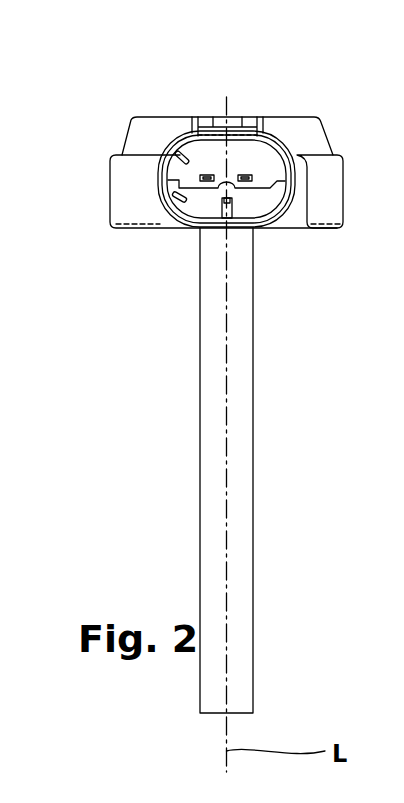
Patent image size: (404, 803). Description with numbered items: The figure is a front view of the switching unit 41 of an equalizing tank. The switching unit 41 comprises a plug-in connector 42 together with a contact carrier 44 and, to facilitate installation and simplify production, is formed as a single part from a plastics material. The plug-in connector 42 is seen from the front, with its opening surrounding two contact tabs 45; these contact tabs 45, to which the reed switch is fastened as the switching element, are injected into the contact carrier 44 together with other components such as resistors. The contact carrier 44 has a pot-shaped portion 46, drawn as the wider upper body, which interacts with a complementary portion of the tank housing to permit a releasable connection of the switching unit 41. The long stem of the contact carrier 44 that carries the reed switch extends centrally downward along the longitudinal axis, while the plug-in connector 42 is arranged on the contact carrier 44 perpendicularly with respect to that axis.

The switching unit 41 is at (160, 113).
The plug-in connector 42 is at (242, 168).
The contact carrier 44 is at (235, 423).
The contact tabs 45 is at (206, 181).
The pot-shaped portion 46 is at (110, 180).